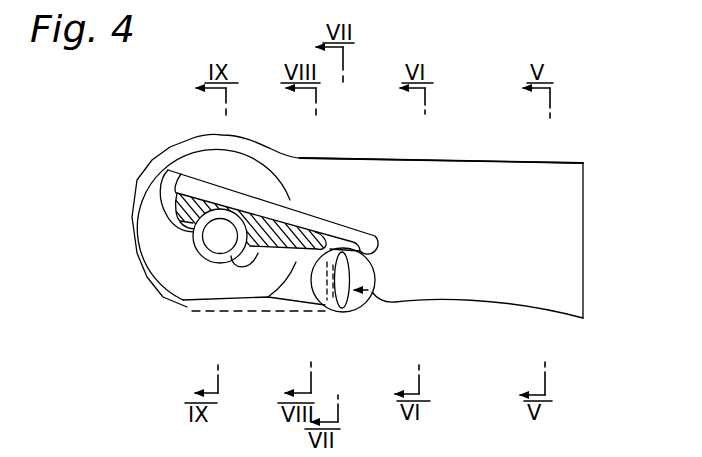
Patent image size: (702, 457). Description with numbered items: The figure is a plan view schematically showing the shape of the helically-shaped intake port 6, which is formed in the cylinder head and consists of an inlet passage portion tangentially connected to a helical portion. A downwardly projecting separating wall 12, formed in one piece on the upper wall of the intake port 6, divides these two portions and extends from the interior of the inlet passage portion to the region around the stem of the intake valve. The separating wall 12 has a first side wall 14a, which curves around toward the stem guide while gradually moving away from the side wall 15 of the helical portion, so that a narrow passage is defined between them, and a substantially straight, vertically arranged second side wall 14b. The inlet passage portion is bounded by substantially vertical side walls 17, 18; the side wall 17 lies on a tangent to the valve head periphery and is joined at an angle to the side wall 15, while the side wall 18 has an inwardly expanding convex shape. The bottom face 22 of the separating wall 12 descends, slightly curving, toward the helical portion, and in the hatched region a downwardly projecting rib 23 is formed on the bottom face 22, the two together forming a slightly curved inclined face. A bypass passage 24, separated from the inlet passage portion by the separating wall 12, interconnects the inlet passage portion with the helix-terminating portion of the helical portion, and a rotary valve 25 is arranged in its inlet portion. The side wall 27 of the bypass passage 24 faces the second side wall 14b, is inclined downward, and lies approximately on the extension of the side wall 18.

The helically-shaped intake port 6 is at (480, 229).
The separating wall 12 is at (174, 190).
The first side wall 14a is at (303, 215).
The second side wall 14b is at (240, 265).
The side wall of the helical portion 15 is at (135, 250).
The side wall of the inlet passage portion 17 is at (446, 160).
The side wall of the inlet passage portion 18 is at (460, 302).
The bottom face of the separating wall 22 is at (330, 230).
The rib 23 is at (172, 212).
The bypass passage 24 is at (302, 284).
The rotary valve 25 is at (388, 296).
The side wall of the bypass passage 27 is at (249, 295).